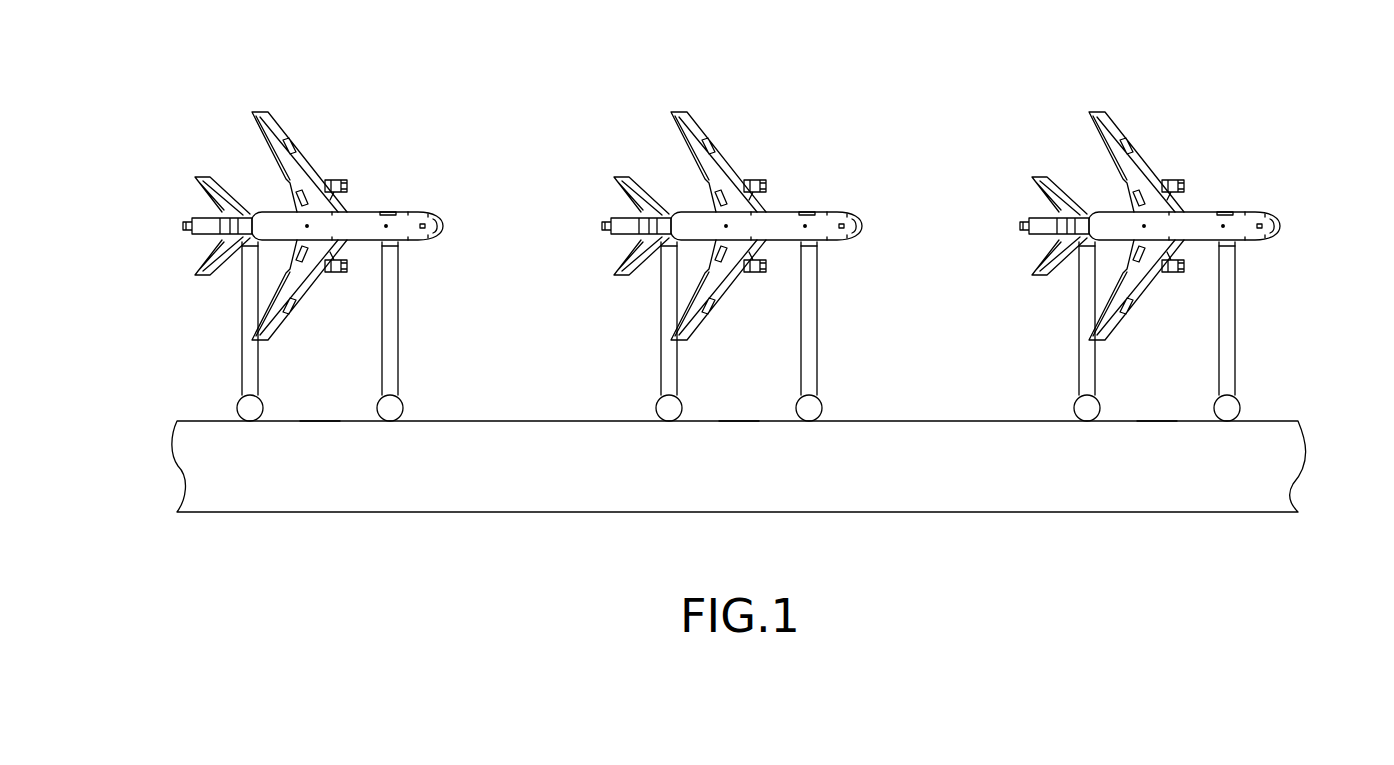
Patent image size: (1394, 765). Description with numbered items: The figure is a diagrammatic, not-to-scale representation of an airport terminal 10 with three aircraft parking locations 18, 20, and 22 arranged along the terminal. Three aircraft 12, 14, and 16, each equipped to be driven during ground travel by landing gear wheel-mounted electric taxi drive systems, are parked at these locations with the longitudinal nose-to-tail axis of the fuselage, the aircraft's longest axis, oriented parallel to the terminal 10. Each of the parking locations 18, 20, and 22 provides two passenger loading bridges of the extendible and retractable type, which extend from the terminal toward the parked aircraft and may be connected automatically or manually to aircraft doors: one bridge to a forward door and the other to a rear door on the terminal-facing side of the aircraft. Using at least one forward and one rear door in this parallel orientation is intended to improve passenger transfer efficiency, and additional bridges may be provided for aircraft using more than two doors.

The airport terminal 10 is at (198, 476).
The aircraft 12 is at (348, 152).
The aircraft 14 is at (767, 152).
The aircraft 16 is at (1185, 152).
The parking location 18 is at (320, 432).
The parking location 20 is at (739, 432).
The parking location 22 is at (1157, 432).